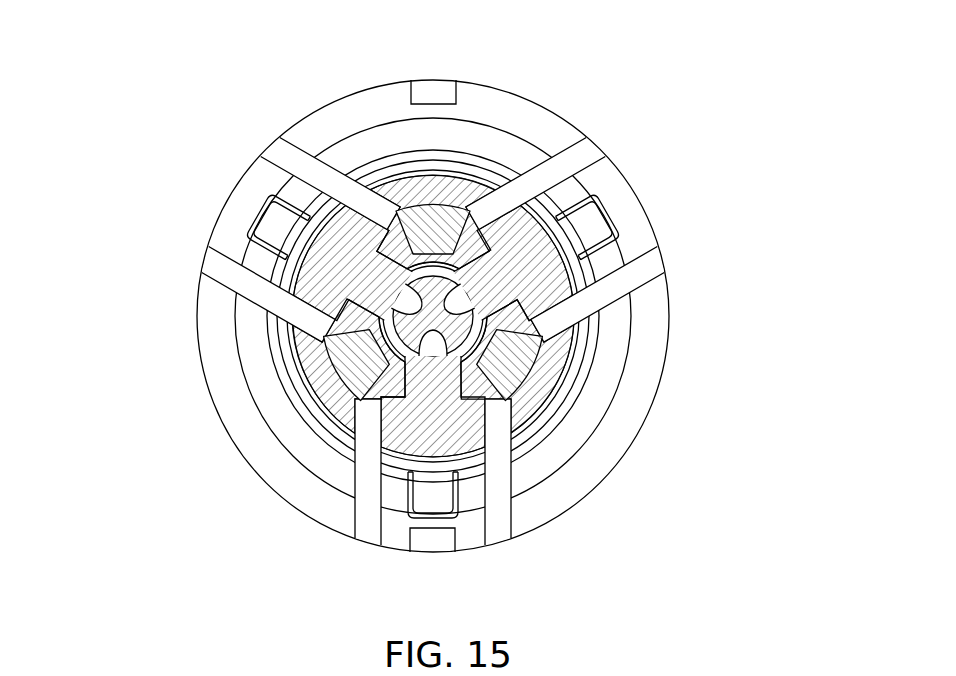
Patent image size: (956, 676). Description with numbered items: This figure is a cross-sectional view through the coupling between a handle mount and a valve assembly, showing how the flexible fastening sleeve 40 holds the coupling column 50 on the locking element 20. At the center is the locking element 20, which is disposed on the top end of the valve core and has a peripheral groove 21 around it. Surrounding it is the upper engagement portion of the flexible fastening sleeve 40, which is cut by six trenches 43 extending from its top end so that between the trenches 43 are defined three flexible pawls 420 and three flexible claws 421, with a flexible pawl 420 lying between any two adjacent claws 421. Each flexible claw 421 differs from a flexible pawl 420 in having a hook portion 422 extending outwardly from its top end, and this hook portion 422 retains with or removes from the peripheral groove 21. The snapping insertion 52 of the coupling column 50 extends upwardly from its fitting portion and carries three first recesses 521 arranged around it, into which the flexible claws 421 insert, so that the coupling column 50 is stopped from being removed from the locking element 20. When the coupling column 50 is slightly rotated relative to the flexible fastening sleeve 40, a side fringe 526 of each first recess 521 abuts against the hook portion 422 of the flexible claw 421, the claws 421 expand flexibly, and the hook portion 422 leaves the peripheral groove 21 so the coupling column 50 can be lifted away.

The locking element 20 is at (440, 205).
The peripheral groove 21 is at (535, 405).
The flexible fastening sleeve 40 is at (240, 167).
The trenches 43 is at (547, 173).
The coupling column 50 is at (436, 252).
The snapping insertion 52 is at (333, 397).
The flexible pawl 420 is at (455, 200).
The flexible claw 421 is at (617, 226).
The hook portion 422 is at (605, 262).
The first recesses 521 is at (505, 205).
The side fringe 526 is at (550, 355).